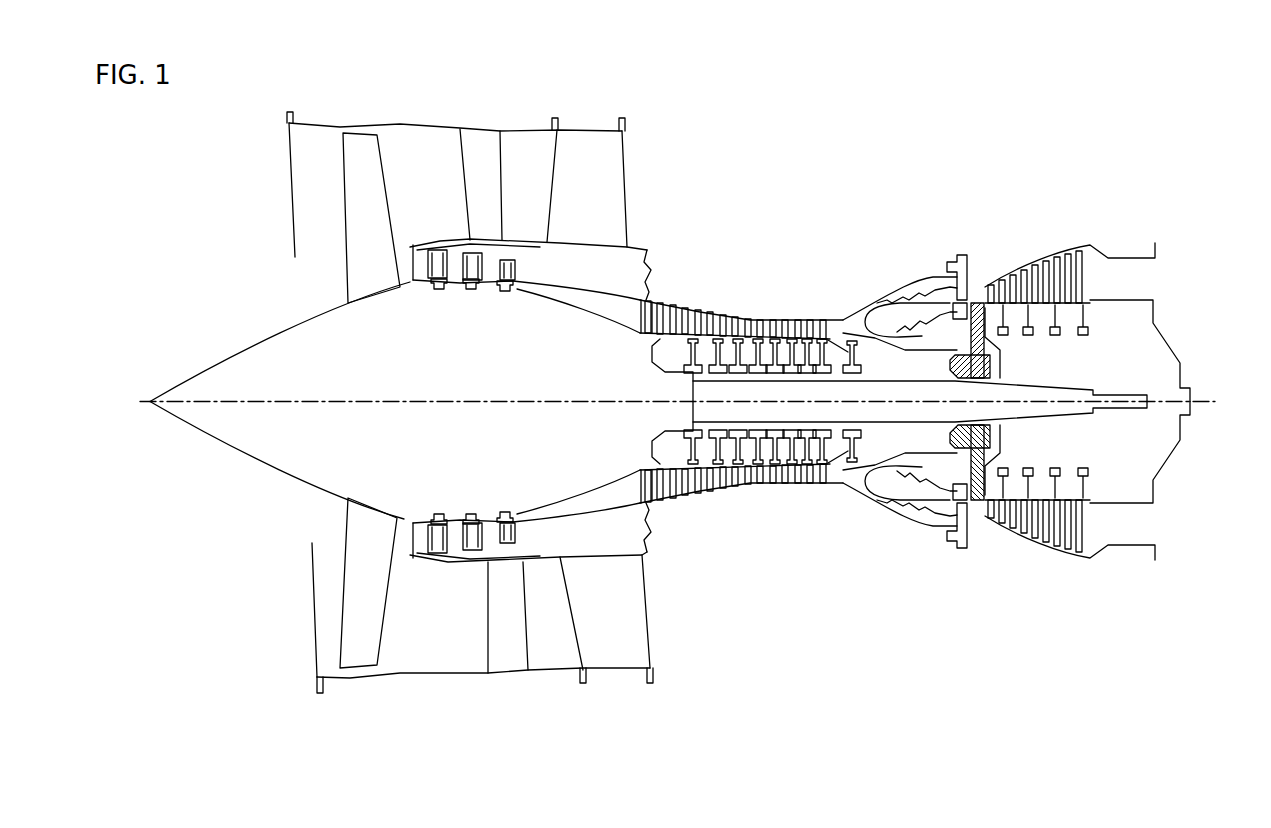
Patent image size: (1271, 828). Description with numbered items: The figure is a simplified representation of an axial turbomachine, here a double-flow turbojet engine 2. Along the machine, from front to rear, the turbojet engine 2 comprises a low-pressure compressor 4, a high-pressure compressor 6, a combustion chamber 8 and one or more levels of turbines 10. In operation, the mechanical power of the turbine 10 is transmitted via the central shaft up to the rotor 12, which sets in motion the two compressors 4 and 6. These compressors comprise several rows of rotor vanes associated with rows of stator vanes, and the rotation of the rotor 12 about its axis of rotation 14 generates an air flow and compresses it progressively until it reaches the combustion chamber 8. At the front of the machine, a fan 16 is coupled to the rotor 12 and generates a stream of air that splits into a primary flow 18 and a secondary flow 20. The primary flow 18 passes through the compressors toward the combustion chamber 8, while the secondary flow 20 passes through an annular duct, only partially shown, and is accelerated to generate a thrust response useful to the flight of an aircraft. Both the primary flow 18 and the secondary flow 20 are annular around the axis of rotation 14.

The turbojet engine 2 is at (894, 154).
The low-pressure compressor 4 is at (433, 289).
The high-pressure compressor 6 is at (708, 330).
The combustion chamber 8 is at (882, 320).
The turbine 10 is at (1065, 280).
The rotor 12 is at (255, 434).
The axis of rotation 14 is at (478, 403).
The fan 16 is at (365, 208).
The primary flow 18 is at (529, 270).
The secondary flow 20 is at (636, 175).